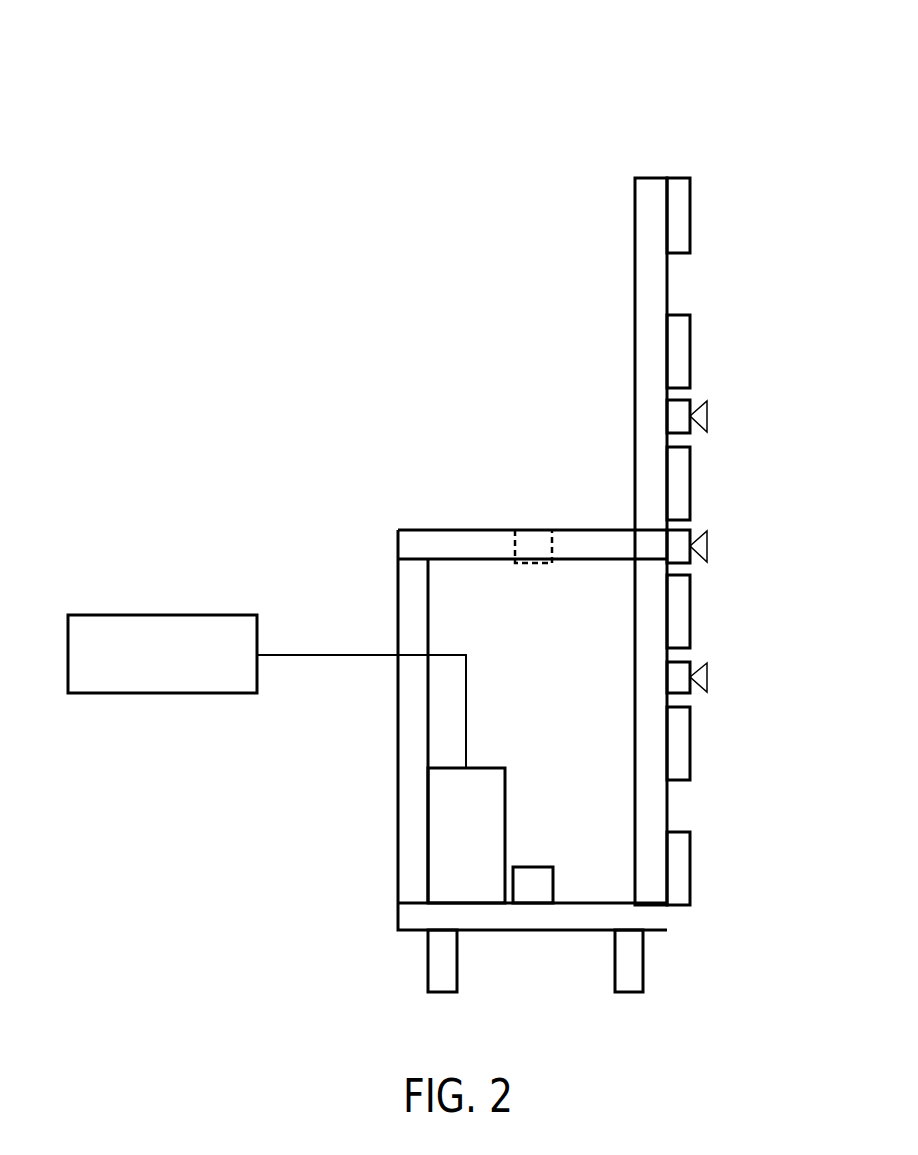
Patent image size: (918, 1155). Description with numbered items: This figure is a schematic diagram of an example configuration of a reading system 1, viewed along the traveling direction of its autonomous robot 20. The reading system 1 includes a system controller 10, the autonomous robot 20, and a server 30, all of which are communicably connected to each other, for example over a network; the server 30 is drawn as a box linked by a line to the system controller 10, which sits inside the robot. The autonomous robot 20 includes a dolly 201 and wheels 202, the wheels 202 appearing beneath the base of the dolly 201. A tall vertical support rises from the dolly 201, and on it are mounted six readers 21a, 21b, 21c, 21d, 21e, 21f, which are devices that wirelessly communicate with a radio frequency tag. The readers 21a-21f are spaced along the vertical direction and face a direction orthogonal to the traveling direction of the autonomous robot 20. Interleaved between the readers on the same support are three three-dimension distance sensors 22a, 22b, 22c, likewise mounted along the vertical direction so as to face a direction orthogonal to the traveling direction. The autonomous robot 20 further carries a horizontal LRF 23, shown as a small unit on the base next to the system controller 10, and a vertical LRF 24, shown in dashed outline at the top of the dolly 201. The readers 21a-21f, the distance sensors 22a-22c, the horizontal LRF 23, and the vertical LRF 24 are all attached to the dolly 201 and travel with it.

The reading system 1 is at (603, 108).
The system controller 10 is at (480, 766).
The autonomous robot 20 is at (635, 279).
The dolly 201 is at (398, 537).
The wheels 202 is at (427, 961).
The reader 21a is at (690, 215).
The reader 21b is at (690, 350).
The reader 21c is at (690, 470).
The reader 21d is at (690, 600).
The reader 21e is at (690, 745).
The reader 21f is at (690, 865).
The three-dimension distance sensor 22a is at (708, 416).
The three-dimension distance sensor 22b is at (708, 546).
The three-dimension distance sensor 22c is at (708, 677).
The horizontal LRF 23 is at (532, 866).
The vertical LRF 24 is at (540, 528).
The server 30 is at (160, 613).